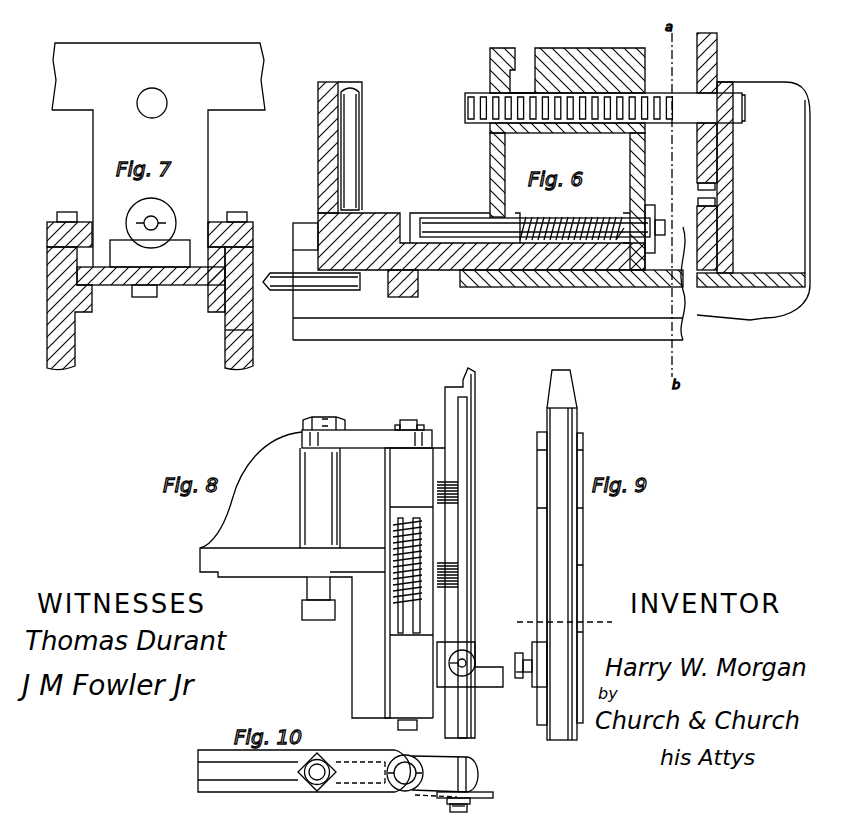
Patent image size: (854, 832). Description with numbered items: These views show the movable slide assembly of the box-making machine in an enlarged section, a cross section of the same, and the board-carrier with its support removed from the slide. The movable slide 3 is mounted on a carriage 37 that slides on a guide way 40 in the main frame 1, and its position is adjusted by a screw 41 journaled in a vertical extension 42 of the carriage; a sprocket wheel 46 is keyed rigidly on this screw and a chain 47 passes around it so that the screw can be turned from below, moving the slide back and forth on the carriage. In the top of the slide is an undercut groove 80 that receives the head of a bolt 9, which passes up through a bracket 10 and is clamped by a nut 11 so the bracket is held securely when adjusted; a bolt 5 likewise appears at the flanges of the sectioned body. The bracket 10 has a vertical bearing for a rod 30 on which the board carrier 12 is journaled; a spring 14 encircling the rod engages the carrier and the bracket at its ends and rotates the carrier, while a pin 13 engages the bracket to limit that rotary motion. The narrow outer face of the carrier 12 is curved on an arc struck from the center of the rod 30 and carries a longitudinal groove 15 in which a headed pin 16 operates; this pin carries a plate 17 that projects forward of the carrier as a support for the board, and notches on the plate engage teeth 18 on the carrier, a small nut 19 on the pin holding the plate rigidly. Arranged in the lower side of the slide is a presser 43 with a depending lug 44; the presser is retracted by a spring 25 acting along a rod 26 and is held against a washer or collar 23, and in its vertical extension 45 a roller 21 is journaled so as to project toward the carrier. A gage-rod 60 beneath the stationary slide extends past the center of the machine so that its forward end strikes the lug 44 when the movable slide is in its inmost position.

In FIG. 7, the frame 1 is at (60, 288).
In FIG. 6, the frame 1 is at (753, 201).
In FIG. 7, the stationary slide 3 is at (158, 155).
In FIG. 6, the stationary slide 3 is at (567, 159).
In FIG. 7, the bolt 5 is at (47, 232).
In FIG. 6, the bolt 5 is at (306, 223).
In FIG. 8, the bolt 9 is at (320, 417).
In FIG. 9, the bolt 9 is at (561, 624).
In FIG. 10, the bolt 9 is at (322, 764).
In FIG. 8, the bracket 10 is at (316, 575).
In FIG. 9, the bracket 10 is at (579, 558).
In FIG. 10, the bracket 10 is at (304, 771).
In FIG. 8, the nut 11 is at (338, 426).
In FIG. 8, the board carrier 12 is at (411, 589).
In FIG. 9, the board carrier 12 is at (559, 555).
In FIG. 10, the board carrier 12 is at (476, 772).
In FIG. 8, the pin 13 is at (388, 484).
In FIG. 10, the pin 13 is at (378, 762).
In FIG. 8, the spring 14 is at (393, 553).
In FIG. 8, the longitudinal groove 15 is at (464, 436).
In FIG. 8, the headed pin 16 is at (473, 657).
In FIG. 9, the headed pin 16 is at (515, 663).
In FIG. 10, the headed pin 16 is at (470, 806).
In FIG. 8, the plate 17 is at (470, 664).
In FIG. 9, the plate 17 is at (538, 686).
In FIG. 10, the plate 17 is at (494, 795).
In FIG. 8, the teeth 18 is at (456, 494).
In FIG. 8, the nut 19 is at (450, 663).
In FIG. 9, the nut 19 is at (520, 679).
In FIG. 10, the nut 19 is at (447, 808).
In FIG. 6, the roller 21 is at (360, 124).
In FIG. 7, the washer or collar 23 is at (165, 211).
In FIG. 6, the washer or collar 23 is at (650, 205).
In FIG. 6, the spring 25 is at (576, 217).
In FIG. 6, the rod 26 is at (515, 217).
In FIG. 8, the rod or pin 30 is at (410, 420).
In FIG. 10, the rod or pin 30 is at (400, 765).
In FIG. 7, the carriage 37 is at (182, 286).
In FIG. 6, the carriage 37 is at (488, 307).
In FIG. 7, the guide way 40 is at (222, 328).
In FIG. 6, the guide way 40 is at (600, 336).
In FIG. 6, the adjusting screw 41 is at (468, 101).
In FIG. 6, the vertical extension 42 is at (735, 209).
In FIG. 7, the presser 43 is at (150, 253).
In FIG. 6, the presser 43 is at (441, 272).
In FIG. 7, the depending lug 44 is at (142, 297).
In FIG. 6, the depending lug 44 is at (406, 297).
In FIG. 6, the vertical extension 45 is at (318, 128).
In FIG. 6, the sprocket wheel 46 is at (712, 48).
In FIG. 6, the chain 47 is at (698, 186).
In FIG. 6, the gage-rod 60 is at (322, 290).
In FIG. 6, the undercut groove 80 is at (515, 82).